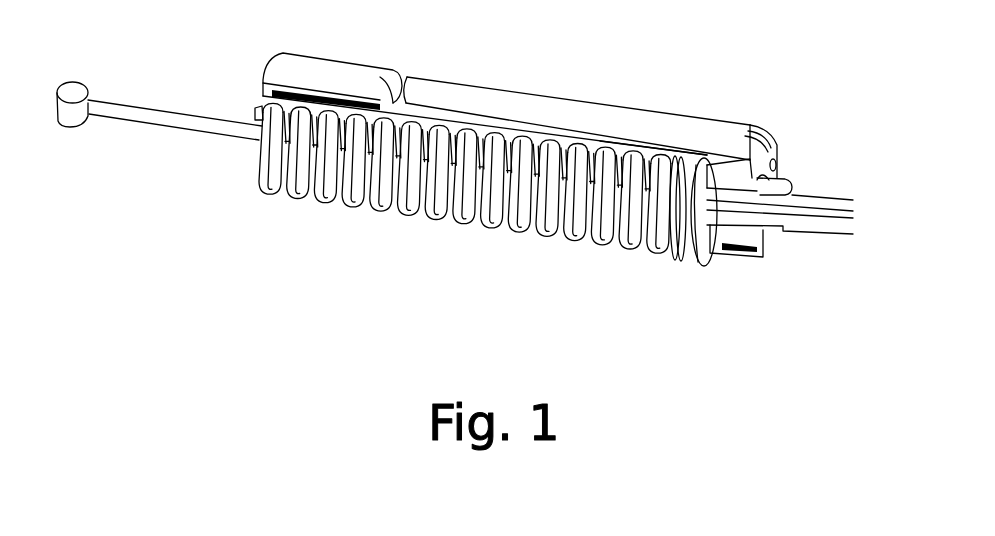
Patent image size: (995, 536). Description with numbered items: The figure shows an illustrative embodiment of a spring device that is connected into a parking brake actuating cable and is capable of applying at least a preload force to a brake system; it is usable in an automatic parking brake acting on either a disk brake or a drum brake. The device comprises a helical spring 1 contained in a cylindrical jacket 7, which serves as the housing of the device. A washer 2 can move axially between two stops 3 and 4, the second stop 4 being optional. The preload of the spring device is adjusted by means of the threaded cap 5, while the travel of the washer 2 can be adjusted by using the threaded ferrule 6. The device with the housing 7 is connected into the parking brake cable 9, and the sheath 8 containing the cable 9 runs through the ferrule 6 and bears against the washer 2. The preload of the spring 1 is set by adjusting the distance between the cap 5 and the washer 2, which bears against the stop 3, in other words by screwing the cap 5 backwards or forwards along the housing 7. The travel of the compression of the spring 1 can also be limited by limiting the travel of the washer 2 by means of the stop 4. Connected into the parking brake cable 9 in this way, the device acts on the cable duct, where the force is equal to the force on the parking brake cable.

The helical spring 1 is at (513, 223).
The washer 2 is at (687, 252).
The stop 3 is at (712, 237).
The stop 4 is at (663, 150).
The threaded cap 5 is at (333, 76).
The threaded ferrule 6 is at (753, 235).
The cylindrical jacket 7 is at (562, 110).
The sheath 8 is at (812, 232).
The parking brake cable 9 is at (137, 110).